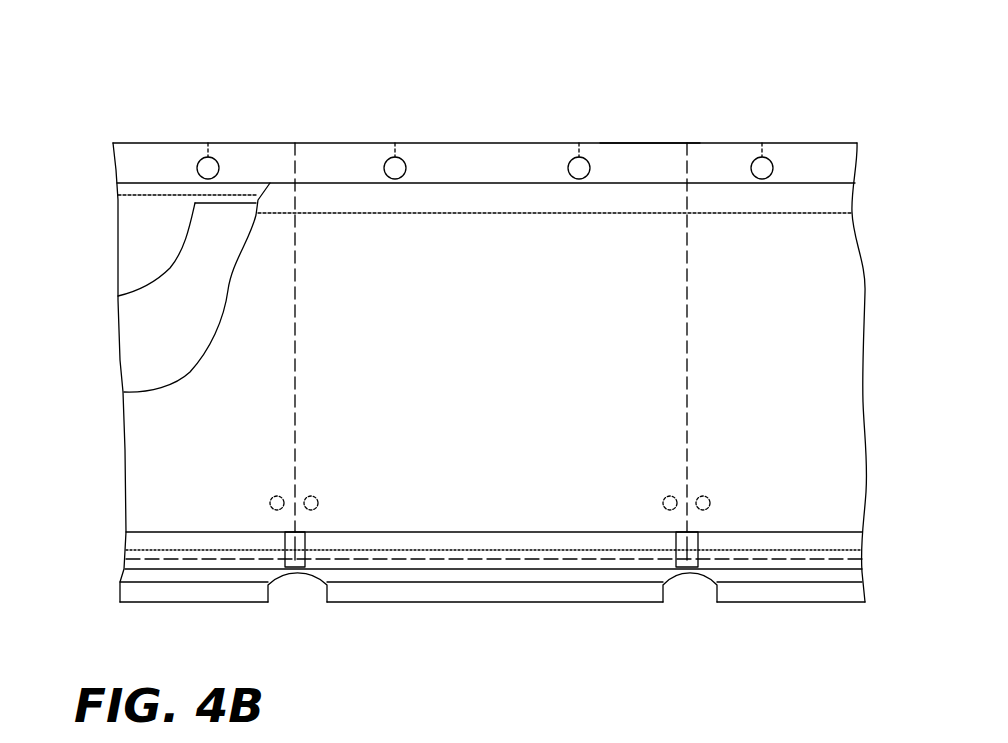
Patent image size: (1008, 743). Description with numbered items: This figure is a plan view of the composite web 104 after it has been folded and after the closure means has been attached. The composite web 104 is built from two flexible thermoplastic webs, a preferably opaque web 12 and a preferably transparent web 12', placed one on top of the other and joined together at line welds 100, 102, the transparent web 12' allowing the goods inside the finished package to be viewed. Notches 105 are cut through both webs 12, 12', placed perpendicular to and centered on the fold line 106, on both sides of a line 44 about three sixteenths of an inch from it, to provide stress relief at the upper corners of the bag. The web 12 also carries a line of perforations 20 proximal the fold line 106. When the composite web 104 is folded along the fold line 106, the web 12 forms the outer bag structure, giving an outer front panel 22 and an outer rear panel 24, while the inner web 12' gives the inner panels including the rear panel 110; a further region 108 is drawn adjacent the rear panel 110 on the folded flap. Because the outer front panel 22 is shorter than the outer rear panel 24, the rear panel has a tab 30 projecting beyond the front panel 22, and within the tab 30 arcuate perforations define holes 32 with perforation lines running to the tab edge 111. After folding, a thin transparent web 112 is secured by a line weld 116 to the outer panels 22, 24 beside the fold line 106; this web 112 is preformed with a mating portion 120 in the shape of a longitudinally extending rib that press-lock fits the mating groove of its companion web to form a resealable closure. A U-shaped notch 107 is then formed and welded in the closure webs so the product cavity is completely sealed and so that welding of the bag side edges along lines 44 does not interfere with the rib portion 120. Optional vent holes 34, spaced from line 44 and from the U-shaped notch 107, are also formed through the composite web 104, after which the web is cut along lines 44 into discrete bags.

The web 12 is at (462, 344).
The web 12' is at (157, 287).
The line weld 100 is at (175, 195).
The line weld 102 is at (418, 214).
The composite web 104 is at (534, 120).
The rear panel 110 is at (170, 233).
The flap portion 108 is at (199, 316).
The tab edge 111 is at (610, 142).
The tab 30 is at (471, 152).
The holes 32 is at (424, 108).
The outer rear panel 24 is at (270, 177).
The outer front panel 22 is at (514, 389).
The line 44 is at (296, 392).
The vent holes 34 is at (311, 495).
The notches 105 is at (309, 536).
The line of perforations 20 is at (495, 558).
The line weld 116 is at (403, 548).
The fold line 106 is at (358, 590).
The mating portion 120 is at (424, 590).
The web 112 is at (192, 598).
The U-shaped notch 107 is at (285, 596).